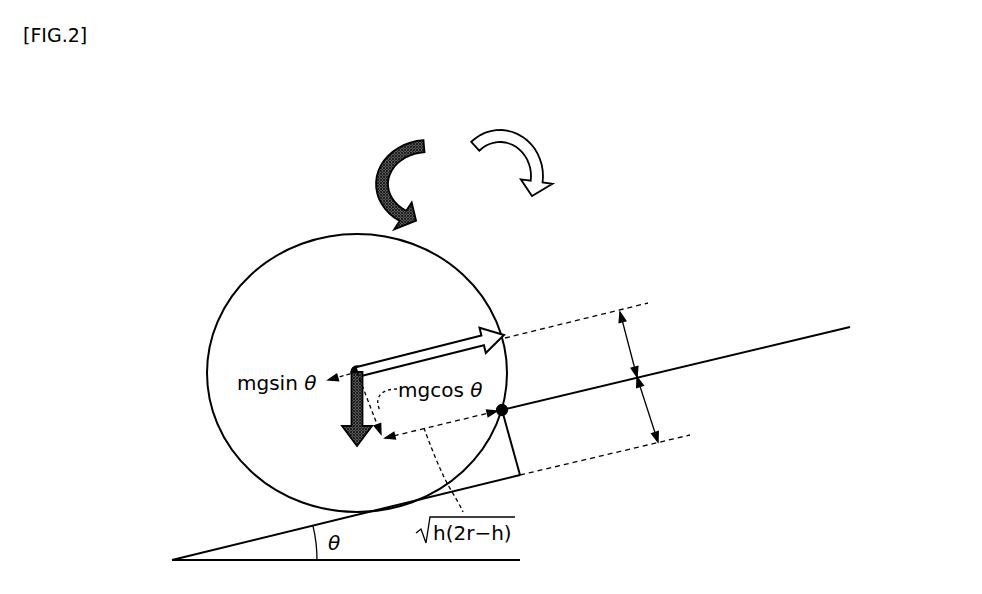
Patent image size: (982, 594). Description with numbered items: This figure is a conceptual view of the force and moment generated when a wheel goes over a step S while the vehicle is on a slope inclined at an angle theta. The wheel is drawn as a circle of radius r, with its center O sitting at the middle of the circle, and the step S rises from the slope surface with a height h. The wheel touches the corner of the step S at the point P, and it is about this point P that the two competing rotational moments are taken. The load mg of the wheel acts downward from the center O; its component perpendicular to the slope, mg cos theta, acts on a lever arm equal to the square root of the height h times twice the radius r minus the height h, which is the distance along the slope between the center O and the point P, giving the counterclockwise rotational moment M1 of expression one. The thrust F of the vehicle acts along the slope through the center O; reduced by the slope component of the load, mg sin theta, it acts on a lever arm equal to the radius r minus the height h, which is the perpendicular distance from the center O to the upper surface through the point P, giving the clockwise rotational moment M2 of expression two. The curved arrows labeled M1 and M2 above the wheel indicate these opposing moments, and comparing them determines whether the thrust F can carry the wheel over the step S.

The center of wheel O is at (357, 366).
The point at corner of step P is at (504, 405).
The step S is at (528, 428).
The radius of wheel r is at (357, 372).
The height of step h is at (651, 377).
The thrust of vehicle F is at (430, 352).
The load mg is at (351, 418).
The rotational moment M1 is at (373, 184).
The rotational moment M2 is at (528, 163).